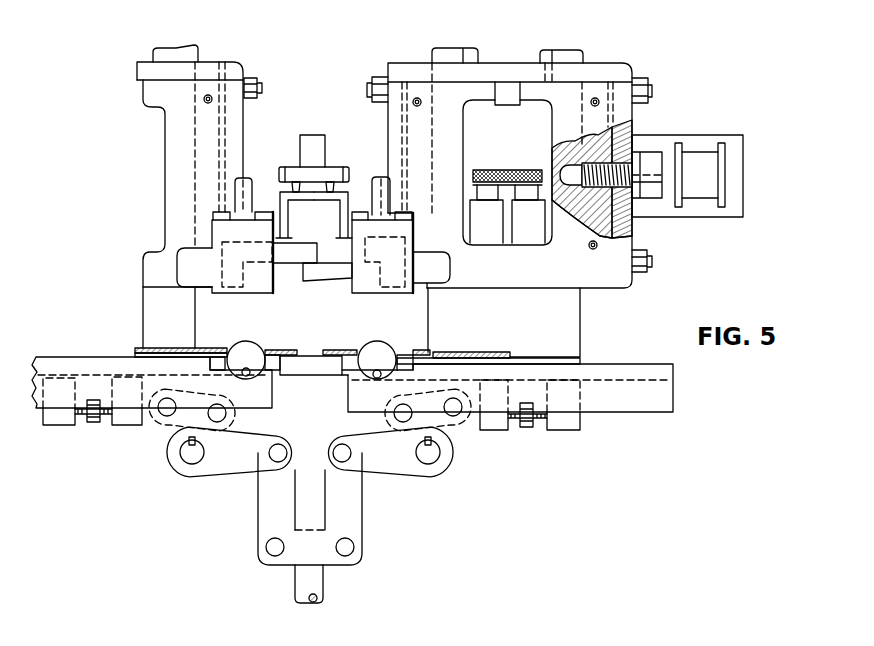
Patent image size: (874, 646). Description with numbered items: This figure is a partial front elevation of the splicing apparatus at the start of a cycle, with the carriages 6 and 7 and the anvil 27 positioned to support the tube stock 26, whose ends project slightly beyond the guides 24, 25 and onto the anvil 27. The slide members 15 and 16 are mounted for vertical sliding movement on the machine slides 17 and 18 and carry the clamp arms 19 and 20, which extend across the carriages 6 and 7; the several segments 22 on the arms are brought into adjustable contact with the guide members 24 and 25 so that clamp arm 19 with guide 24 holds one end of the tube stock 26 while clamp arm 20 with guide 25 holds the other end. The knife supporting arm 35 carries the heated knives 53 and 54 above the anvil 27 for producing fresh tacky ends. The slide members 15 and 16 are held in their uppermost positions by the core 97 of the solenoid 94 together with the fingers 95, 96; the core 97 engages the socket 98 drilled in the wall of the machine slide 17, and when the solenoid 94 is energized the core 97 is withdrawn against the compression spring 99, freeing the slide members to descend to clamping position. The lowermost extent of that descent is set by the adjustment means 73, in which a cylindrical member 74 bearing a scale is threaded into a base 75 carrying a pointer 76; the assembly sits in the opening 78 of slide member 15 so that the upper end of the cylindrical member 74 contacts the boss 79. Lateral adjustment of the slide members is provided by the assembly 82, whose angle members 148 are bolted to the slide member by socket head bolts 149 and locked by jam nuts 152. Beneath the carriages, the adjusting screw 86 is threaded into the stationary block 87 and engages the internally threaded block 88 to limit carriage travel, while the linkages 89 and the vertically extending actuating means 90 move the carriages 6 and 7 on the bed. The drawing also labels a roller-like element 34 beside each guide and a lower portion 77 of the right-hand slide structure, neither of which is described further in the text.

The carriage 6 is at (660, 402).
The carriage 7 is at (98, 363).
The slide member 15 is at (618, 73).
The slide member 16 is at (232, 72).
The machine slide 17 is at (563, 62).
The machine slide 18 is at (186, 58).
The clamp arm 19 is at (379, 180).
The clamp arm 20 is at (246, 186).
The segments 22 is at (217, 215).
The adjustable guide 24 is at (399, 362).
The guide member 25 is at (271, 355).
The tube stock 26 is at (183, 348).
The anvil 27 is at (317, 366).
The roller 34 is at (240, 355).
The knife supporting arm 35 is at (312, 145).
The knife 53 is at (342, 236).
The knife 54 is at (287, 231).
The adjustment means 73 is at (533, 236).
The cylindrical member 74 is at (492, 170).
The base 75 is at (488, 235).
The pointer 76 is at (505, 213).
The block 77 is at (570, 335).
The opening 78 is at (552, 128).
The boss 79 is at (505, 103).
The assembly 82 is at (647, 271).
The adjusting screw 86 is at (93, 425).
The block 87 is at (57, 416).
The internally threaded block 88 is at (128, 424).
The linkages 89 is at (272, 512).
The actuating means 90 is at (305, 586).
The solenoid 94 is at (708, 183).
The finger 95 is at (327, 270).
The finger 96 is at (293, 256).
The core 97 is at (645, 172).
The socket 98 is at (582, 178).
The compression spring 99 is at (628, 224).
The angle member 148 is at (598, 143).
The socket head bolt 149 is at (595, 250).
The jam nut 152 is at (636, 118).